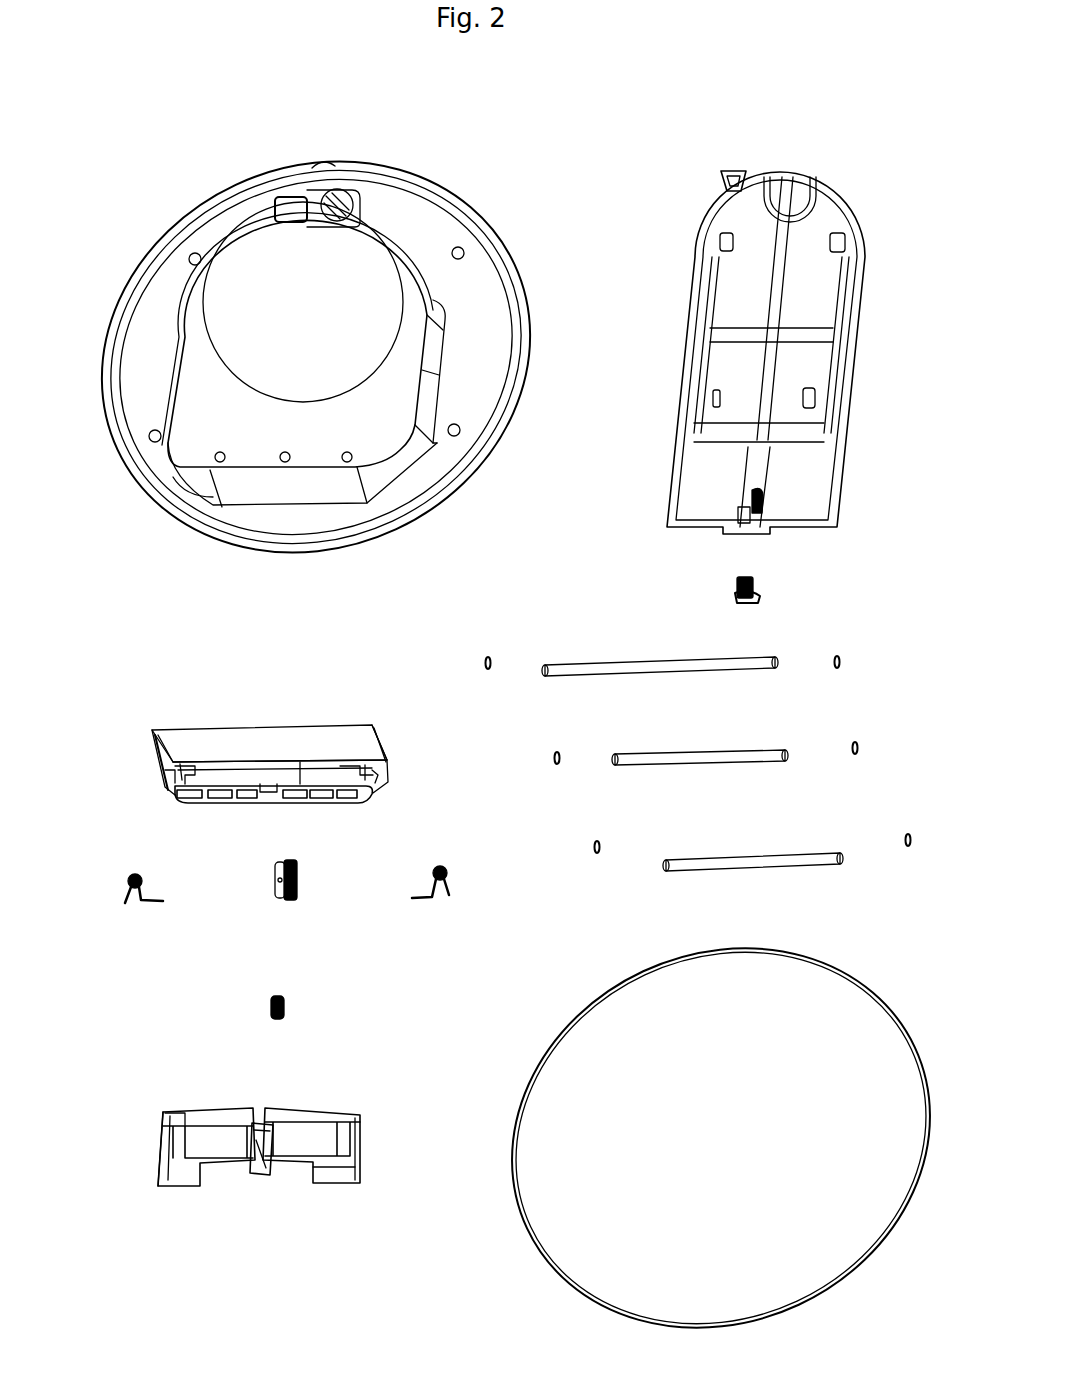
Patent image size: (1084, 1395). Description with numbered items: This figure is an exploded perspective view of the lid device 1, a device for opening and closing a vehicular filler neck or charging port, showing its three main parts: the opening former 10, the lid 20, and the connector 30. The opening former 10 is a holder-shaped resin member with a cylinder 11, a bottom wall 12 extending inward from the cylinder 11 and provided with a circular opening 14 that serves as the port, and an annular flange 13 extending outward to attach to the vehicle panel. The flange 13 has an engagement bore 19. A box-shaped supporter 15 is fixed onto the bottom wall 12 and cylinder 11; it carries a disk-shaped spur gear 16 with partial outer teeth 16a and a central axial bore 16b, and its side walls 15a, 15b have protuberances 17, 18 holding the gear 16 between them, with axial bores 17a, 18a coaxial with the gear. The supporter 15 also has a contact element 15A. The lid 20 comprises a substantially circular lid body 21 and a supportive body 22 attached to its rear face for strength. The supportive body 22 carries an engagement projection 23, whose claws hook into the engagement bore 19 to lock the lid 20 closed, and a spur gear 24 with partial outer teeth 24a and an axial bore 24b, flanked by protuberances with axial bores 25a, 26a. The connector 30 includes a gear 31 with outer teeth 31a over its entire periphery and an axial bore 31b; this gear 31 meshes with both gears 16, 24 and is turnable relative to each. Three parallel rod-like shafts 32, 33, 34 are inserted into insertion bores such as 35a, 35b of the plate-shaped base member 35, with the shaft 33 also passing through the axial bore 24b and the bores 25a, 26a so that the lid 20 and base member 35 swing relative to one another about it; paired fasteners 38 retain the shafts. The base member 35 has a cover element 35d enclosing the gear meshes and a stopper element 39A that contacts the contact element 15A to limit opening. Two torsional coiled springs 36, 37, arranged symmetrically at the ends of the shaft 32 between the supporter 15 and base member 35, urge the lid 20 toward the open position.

The lid device 1 is at (594, 245).
The opening former 10 is at (185, 195).
The cylinder 11 is at (263, 487).
The bottom wall 12 is at (395, 375).
The flange 13 is at (150, 325).
The opening 14 is at (360, 255).
The supporter 15 is at (278, 731).
The contact element 15A is at (305, 760).
The side wall 15a is at (155, 755).
The side wall 15b is at (385, 765).
The gear 16 is at (294, 893).
The outer teeth 16a is at (300, 876).
The axial bore 16b is at (275, 878).
The protuberance 17 is at (180, 762).
The axial bore 17a is at (165, 778).
The protuberance 18 is at (350, 765).
The axial bore 18a is at (375, 782).
The engagement bore 19 is at (290, 205).
The lid 20 is at (795, 155).
The lid body 21 is at (573, 1245).
The supportive body 22 is at (840, 205).
The engagement projection 23 is at (735, 170).
The gear 24 is at (749, 607).
The outer teeth 24a is at (755, 585).
The axial bore 24b is at (740, 583).
The axial bore 25a is at (745, 523).
The axial bore 26a is at (762, 505).
The connector 30 is at (212, 1180).
The gear 31 is at (279, 1024).
The outer teeth 31a is at (286, 1006).
The axial bore 31b is at (270, 1005).
The shaft 32 is at (590, 668).
The shaft 33 is at (715, 862).
The shaft 34 is at (650, 758).
The base member 35 is at (175, 1143).
The insertion bore 35a is at (165, 1120).
The insertion bore 35b is at (318, 1185).
The cover element 35d is at (258, 1175).
The spring 36 is at (130, 870).
The spring 37 is at (447, 884).
The fastener 38 is at (484, 663).
The stopper element 39A is at (300, 1115).